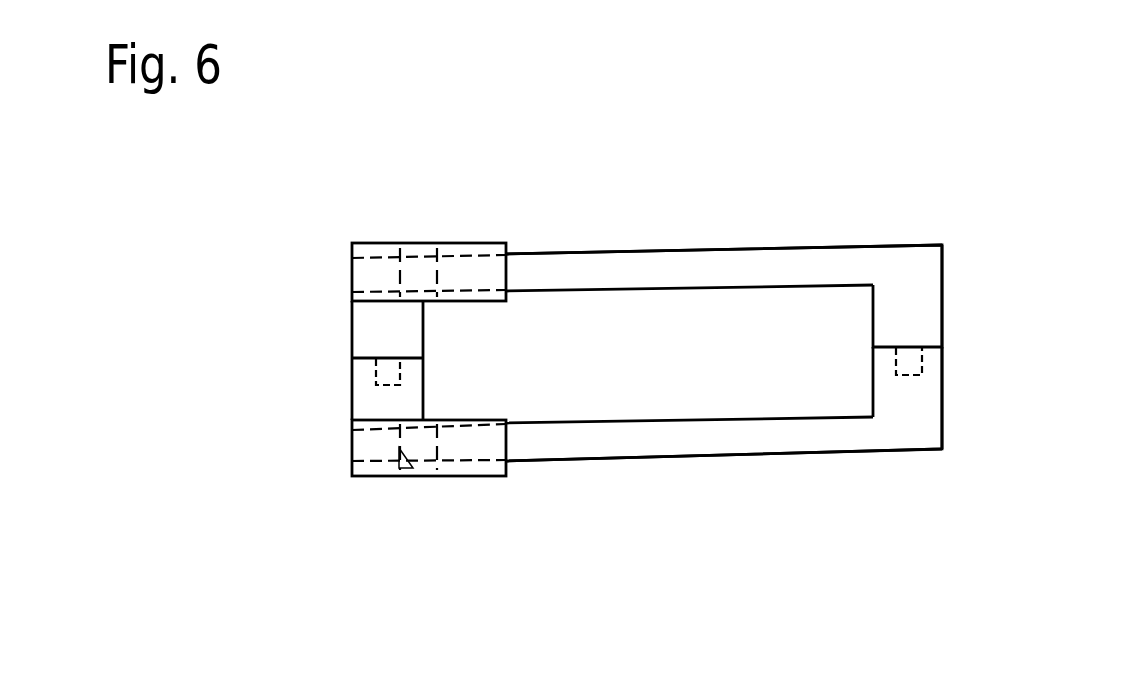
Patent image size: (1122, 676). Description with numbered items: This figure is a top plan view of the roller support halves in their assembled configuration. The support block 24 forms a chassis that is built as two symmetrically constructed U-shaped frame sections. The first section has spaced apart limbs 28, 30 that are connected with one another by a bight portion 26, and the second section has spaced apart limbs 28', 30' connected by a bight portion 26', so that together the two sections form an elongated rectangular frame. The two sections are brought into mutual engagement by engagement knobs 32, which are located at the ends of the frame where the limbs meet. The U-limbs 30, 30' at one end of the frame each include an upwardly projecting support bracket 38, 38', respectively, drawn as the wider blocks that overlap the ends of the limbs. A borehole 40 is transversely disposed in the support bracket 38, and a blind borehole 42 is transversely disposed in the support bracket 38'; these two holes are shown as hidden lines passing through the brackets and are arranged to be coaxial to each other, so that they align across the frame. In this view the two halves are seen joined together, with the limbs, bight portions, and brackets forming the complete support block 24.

The support block 24 is at (788, 230).
The bight portion 26 is at (724, 203).
The bight portion 26' is at (724, 509).
The U-limb 28 is at (970, 296).
The U-limb 28' is at (980, 408).
The U-limb 30 is at (317, 318).
The U-limb 30' is at (321, 416).
The engagement knob 32 is at (375, 380).
The support bracket 38 is at (456, 207).
The support bracket 38' is at (431, 514).
The borehole 40 is at (398, 278).
The blind borehole 42 is at (413, 466).